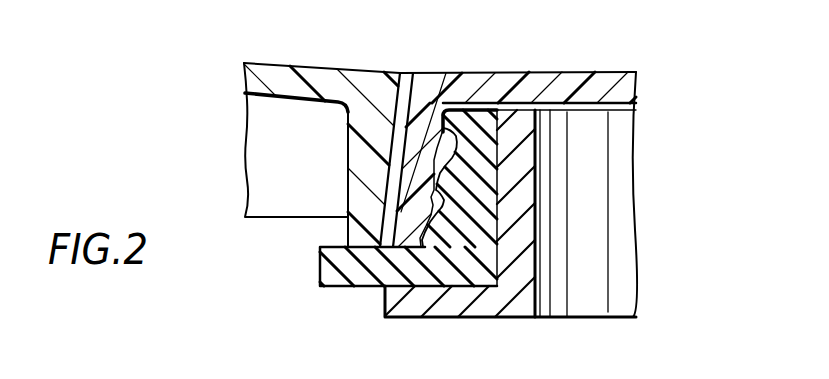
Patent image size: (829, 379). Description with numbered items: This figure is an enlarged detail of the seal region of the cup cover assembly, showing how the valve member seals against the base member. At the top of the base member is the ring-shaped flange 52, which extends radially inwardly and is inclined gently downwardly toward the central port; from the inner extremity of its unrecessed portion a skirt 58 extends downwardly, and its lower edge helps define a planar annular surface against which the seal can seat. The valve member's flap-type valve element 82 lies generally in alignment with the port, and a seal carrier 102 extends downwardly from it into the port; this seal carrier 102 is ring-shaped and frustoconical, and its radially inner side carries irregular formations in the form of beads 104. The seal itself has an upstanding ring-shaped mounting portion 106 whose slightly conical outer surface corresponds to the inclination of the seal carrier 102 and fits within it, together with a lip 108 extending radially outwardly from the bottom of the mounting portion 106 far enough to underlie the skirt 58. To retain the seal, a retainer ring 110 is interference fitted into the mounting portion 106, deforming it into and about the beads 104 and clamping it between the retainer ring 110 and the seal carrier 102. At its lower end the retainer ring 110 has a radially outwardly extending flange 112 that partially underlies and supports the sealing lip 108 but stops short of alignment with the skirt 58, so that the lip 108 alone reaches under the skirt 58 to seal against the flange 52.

The flange 52 is at (286, 82).
The skirt 58 is at (360, 166).
The valve element 82 is at (602, 82).
The seal carrier 102 is at (428, 130).
The beads 104 is at (455, 210).
The mounting portion 106 is at (490, 193).
The lip 108 is at (355, 272).
The retainer ring 110 is at (525, 230).
The flange 112 is at (438, 305).